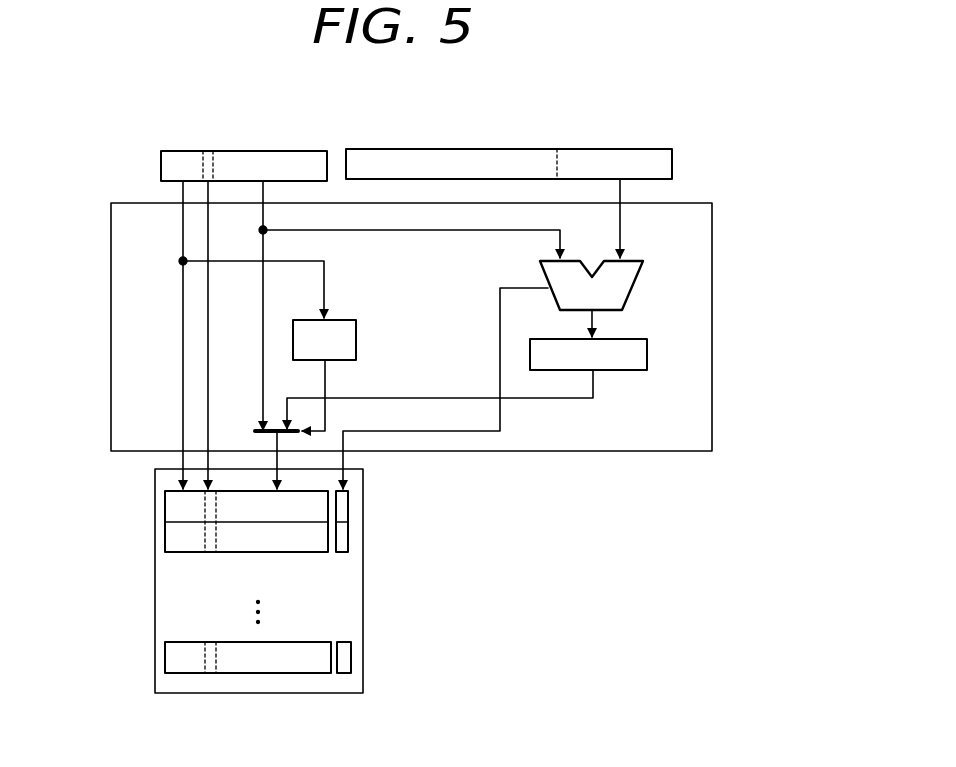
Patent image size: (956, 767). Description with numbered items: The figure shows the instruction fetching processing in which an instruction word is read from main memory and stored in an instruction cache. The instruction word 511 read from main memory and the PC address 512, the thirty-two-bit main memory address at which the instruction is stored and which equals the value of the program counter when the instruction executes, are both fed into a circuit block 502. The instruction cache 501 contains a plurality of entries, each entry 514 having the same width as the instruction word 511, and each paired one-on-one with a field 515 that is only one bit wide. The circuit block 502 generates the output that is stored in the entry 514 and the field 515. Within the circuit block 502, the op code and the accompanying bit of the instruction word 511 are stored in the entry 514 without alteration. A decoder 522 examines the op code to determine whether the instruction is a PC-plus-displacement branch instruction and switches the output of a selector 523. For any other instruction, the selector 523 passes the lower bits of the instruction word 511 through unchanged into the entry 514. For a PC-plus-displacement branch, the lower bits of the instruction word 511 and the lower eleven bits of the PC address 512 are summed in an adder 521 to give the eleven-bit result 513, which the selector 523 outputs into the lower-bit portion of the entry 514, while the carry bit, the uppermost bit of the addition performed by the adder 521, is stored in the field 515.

The instruction cache 501 is at (363, 515).
The circuit block 502 is at (653, 452).
The instruction word 511 is at (245, 151).
The PC address 512 is at (492, 149).
The 11-bit result 513 is at (630, 339).
The entry 514 is at (231, 553).
The field 515 is at (342, 553).
The adder 521 is at (633, 260).
The decoder 522 is at (345, 320).
The selector 523 is at (254, 430).